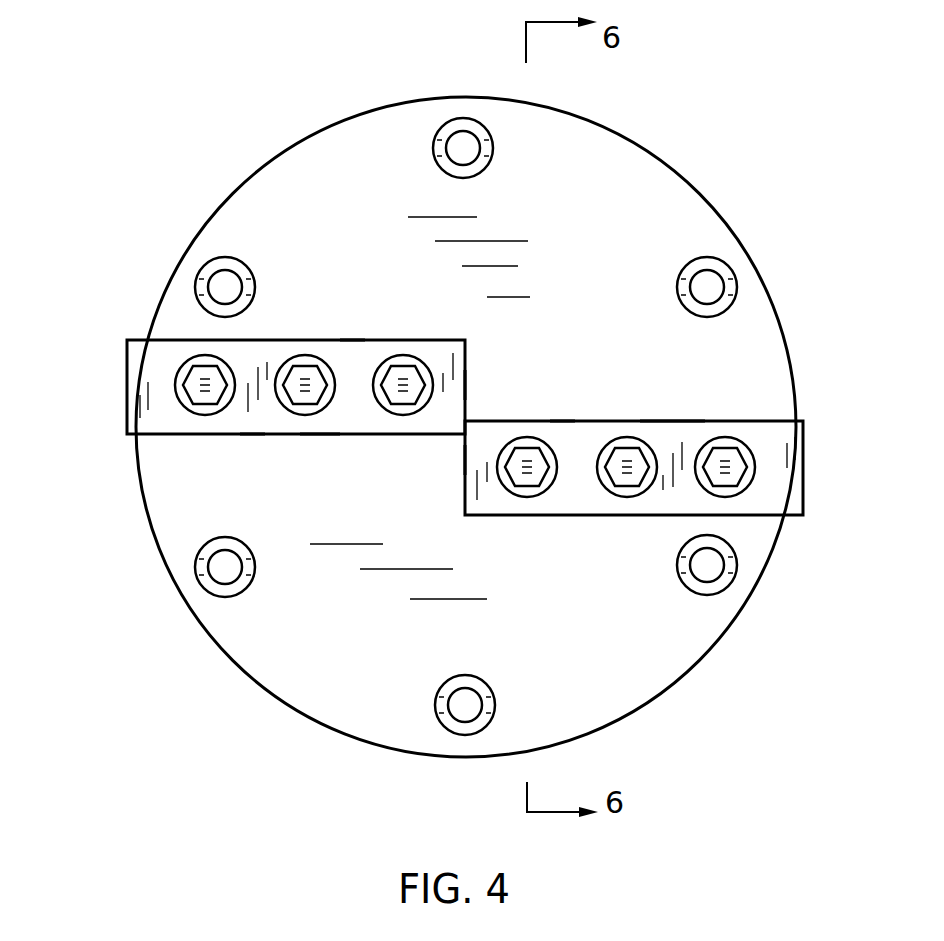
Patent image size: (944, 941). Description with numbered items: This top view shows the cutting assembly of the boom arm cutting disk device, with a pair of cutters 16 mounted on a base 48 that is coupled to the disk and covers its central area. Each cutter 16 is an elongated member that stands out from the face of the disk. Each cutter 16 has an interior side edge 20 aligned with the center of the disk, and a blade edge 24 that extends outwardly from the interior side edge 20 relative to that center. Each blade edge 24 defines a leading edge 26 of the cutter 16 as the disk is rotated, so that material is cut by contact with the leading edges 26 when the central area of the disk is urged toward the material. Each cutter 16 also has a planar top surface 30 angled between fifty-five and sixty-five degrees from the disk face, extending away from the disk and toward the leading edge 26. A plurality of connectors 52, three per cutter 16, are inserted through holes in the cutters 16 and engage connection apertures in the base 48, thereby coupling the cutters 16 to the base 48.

The cutter 16 is at (114, 385).
The interior side edge 20 is at (467, 385).
The blade edge 24 is at (320, 434).
The leading edge 26 is at (253, 452).
The top surface 30 is at (352, 350).
The base 48 is at (690, 638).
The connector 52 is at (302, 374).